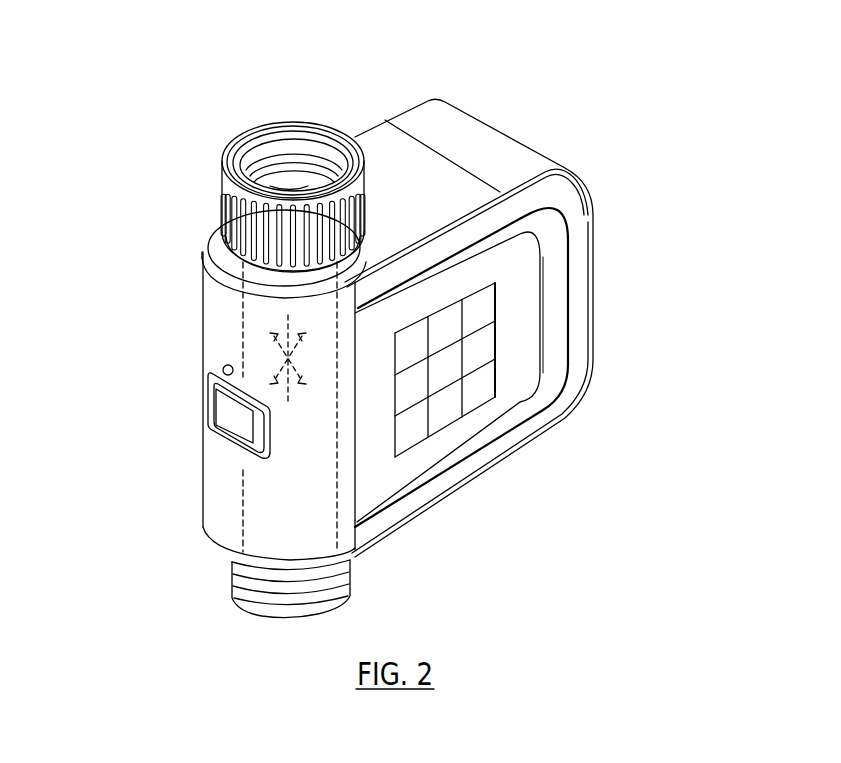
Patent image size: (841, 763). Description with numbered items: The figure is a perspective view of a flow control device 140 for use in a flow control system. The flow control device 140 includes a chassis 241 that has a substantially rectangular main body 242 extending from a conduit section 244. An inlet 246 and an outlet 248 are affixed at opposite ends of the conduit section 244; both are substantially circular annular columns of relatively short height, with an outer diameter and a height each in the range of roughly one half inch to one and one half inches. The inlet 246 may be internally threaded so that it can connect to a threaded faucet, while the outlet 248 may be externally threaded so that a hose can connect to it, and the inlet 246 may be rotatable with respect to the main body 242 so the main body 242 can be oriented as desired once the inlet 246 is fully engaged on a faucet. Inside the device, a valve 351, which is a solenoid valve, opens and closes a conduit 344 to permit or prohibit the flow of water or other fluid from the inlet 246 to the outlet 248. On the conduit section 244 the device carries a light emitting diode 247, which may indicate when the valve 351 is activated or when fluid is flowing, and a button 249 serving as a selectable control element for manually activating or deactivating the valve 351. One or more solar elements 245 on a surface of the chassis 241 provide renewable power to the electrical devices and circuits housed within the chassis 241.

The flow control device 140 is at (545, 328).
The chassis 241 is at (590, 360).
The main body 242 is at (527, 290).
The conduit section 244 is at (197, 369).
The solar elements 245 is at (490, 405).
The inlet 246 is at (327, 130).
The light emitting diode (LED) 247 is at (222, 370).
The outlet 248 is at (233, 575).
The button 249 is at (210, 418).
The conduit 344 is at (240, 311).
The valve 351 is at (278, 347).